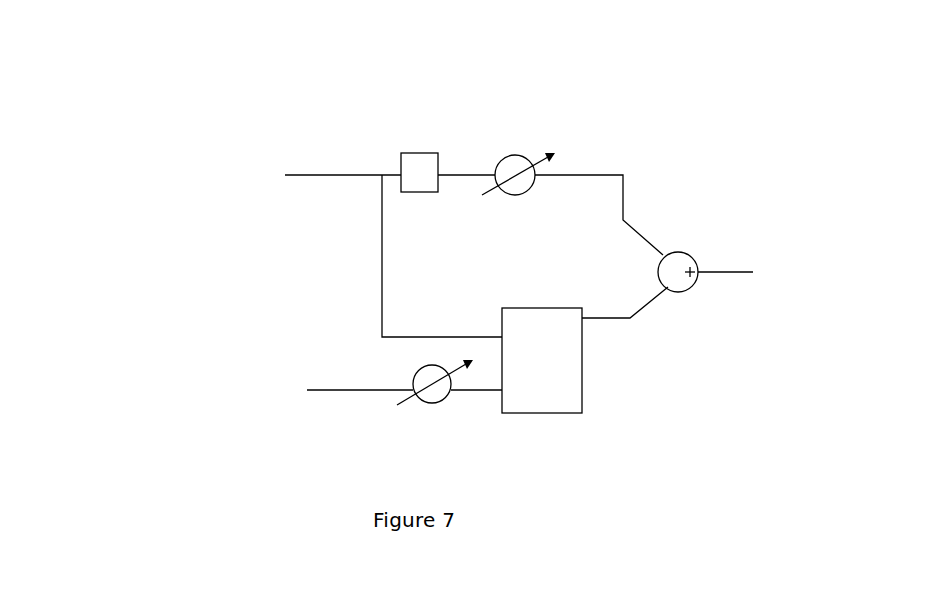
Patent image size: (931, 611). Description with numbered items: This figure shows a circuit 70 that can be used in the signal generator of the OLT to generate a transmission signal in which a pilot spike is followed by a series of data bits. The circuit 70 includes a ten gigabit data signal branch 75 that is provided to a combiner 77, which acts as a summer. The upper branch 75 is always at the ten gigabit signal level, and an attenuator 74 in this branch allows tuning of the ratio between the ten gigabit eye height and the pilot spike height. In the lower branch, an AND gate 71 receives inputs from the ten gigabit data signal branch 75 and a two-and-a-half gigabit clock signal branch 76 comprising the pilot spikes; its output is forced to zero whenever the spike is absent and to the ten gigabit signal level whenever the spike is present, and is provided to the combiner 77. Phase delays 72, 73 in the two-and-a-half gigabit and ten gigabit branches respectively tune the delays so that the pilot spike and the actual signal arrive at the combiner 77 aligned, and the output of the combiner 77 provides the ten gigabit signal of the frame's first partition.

The circuit 70 is at (226, 94).
The AND gate 71 is at (545, 413).
The phase delay 72 is at (427, 403).
The phase delay 73 is at (512, 155).
The attenuator 74 is at (418, 153).
The 10 G data signal branch 75 is at (307, 175).
The 2.5 G clock signal branch 76 is at (338, 390).
The combiner 77 is at (683, 253).